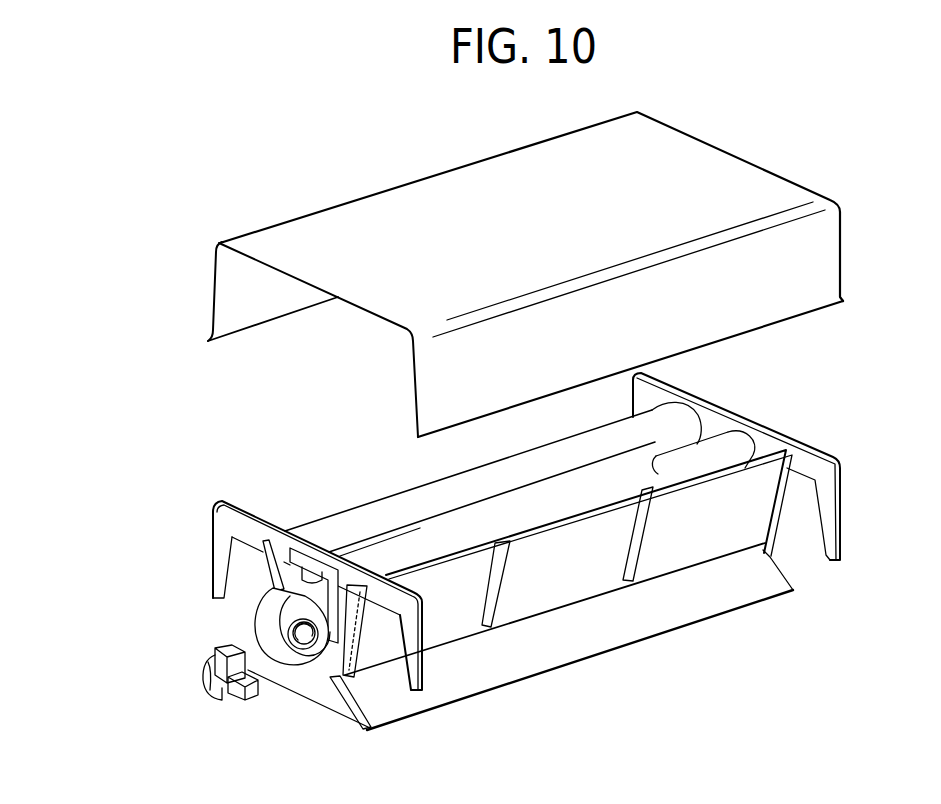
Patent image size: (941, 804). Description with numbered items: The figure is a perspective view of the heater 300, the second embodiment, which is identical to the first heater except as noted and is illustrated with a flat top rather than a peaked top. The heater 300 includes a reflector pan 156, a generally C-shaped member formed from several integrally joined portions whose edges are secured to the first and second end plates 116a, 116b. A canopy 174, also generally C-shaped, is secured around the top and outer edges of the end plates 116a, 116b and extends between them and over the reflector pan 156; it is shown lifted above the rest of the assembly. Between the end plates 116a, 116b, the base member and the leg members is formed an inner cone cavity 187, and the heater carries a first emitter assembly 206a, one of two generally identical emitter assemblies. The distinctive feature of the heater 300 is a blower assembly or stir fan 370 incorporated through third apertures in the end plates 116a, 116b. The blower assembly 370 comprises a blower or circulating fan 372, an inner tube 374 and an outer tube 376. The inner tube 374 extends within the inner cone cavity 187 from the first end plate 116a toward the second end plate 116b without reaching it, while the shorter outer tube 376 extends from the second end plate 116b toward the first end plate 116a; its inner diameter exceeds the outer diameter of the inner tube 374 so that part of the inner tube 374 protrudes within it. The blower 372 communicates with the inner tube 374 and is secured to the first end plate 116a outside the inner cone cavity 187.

The canopy 174 is at (720, 168).
The heater 300 is at (205, 456).
The reflector pan 156 is at (512, 667).
The first emitter assembly 206a is at (563, 577).
The inner cone cavity 187 is at (480, 483).
The inner tube 374 is at (413, 553).
The outer tube 376 is at (725, 447).
The first end plate 116a is at (242, 522).
The second end plate 116b is at (763, 437).
The blower assembly 370 is at (242, 612).
The blower 372 is at (296, 680).